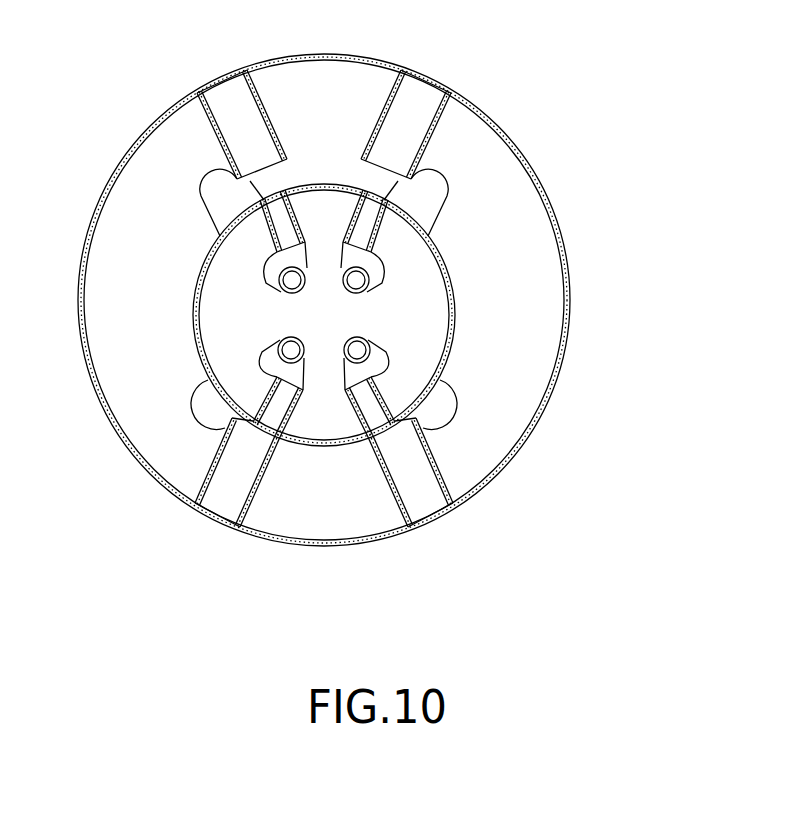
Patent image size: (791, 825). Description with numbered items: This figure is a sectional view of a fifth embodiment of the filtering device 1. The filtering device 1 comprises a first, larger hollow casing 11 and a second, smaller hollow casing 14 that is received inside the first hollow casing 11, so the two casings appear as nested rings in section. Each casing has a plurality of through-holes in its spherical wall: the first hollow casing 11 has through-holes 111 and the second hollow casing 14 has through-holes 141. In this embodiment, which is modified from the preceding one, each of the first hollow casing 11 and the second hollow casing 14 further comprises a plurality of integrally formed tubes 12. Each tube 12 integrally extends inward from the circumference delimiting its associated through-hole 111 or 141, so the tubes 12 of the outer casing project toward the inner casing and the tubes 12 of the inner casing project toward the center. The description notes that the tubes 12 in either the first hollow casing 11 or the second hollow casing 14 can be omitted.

The filtering device 1 is at (137, 490).
The first hollow casing 11 is at (572, 287).
The through-hole 111 is at (425, 92).
The tube 12 is at (387, 105).
The second hollow casing 14 is at (447, 355).
The through-hole 141 is at (373, 420).